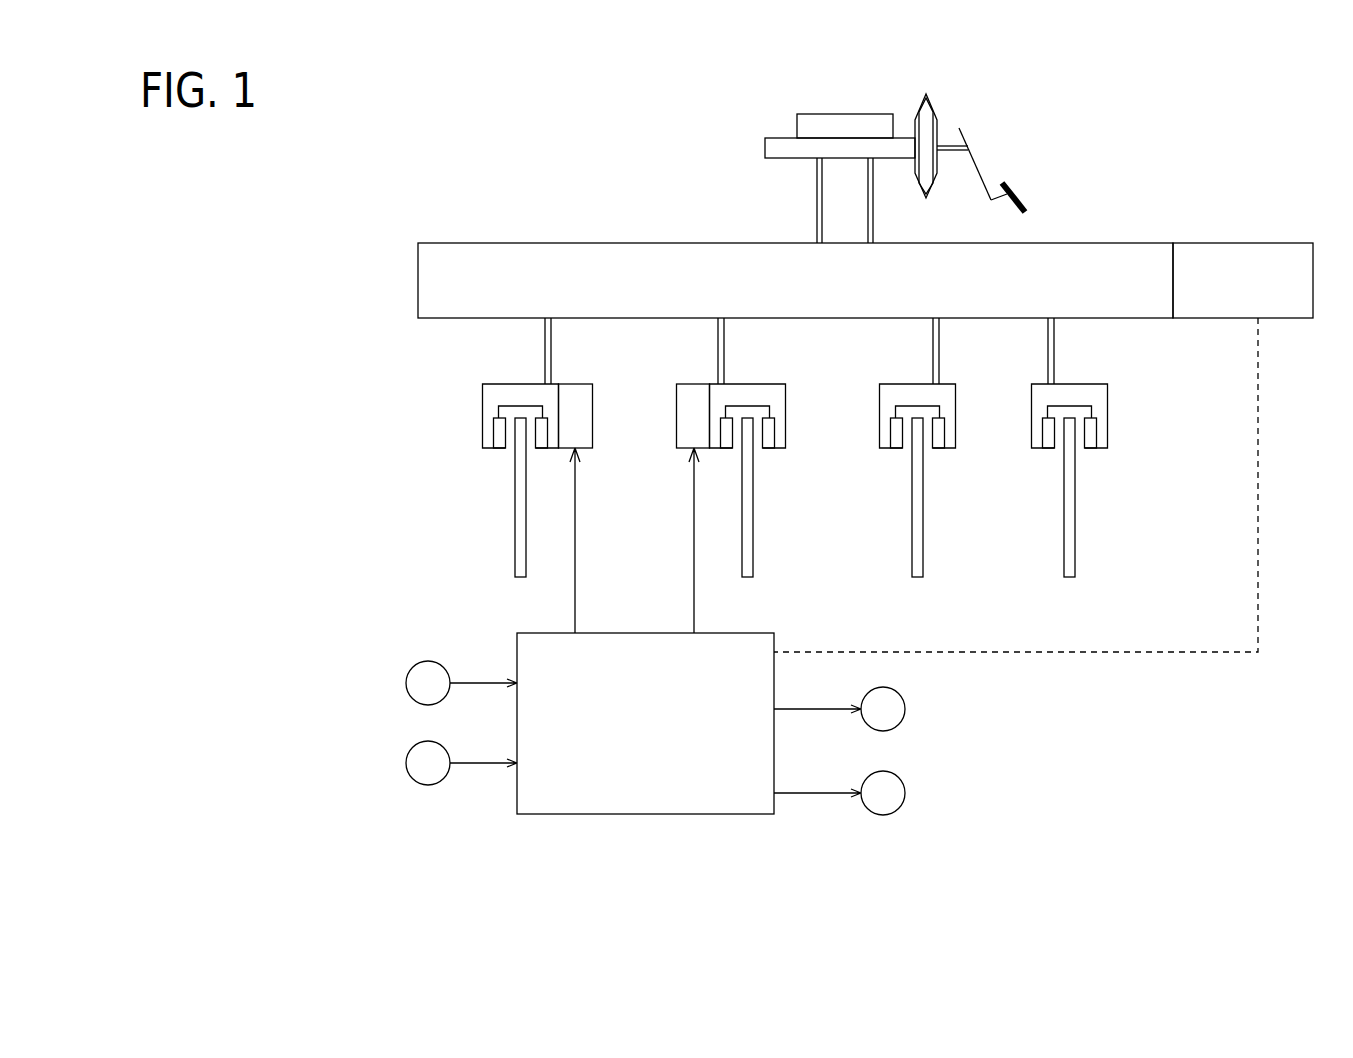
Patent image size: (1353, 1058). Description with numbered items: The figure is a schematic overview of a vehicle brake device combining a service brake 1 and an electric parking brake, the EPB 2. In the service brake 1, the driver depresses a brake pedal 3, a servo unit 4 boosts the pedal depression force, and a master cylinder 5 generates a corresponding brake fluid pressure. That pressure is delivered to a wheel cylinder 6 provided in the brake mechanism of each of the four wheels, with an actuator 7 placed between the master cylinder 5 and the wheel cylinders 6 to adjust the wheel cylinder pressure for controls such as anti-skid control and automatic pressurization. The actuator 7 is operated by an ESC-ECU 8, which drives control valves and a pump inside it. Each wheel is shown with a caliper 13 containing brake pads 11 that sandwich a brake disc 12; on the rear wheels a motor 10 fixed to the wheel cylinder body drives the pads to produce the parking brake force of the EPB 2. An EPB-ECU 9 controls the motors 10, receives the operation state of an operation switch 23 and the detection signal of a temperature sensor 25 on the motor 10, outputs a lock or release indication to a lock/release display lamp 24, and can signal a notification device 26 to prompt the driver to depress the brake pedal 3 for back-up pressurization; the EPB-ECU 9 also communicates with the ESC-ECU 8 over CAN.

The service brake 1 is at (997, 132).
The EPB 2 is at (600, 497).
The brake pedal 3 is at (1007, 178).
The servo unit 4 is at (933, 104).
The master cylinder 5 is at (780, 138).
The wheel cylinder 6 is at (552, 384).
The actuator 7 is at (1127, 243).
The ESC-ECU 8 is at (1285, 243).
The EPB-ECU 9 is at (745, 815).
The motor 10 is at (592, 405).
The brake pad 11 is at (497, 448).
The brake disc 12 is at (515, 512).
The caliper 13 is at (488, 384).
The operation switch 23 is at (452, 672).
The lock/release display lamp 24 is at (897, 690).
The temperature sensor 25 is at (452, 752).
The notification device 26 is at (897, 774).